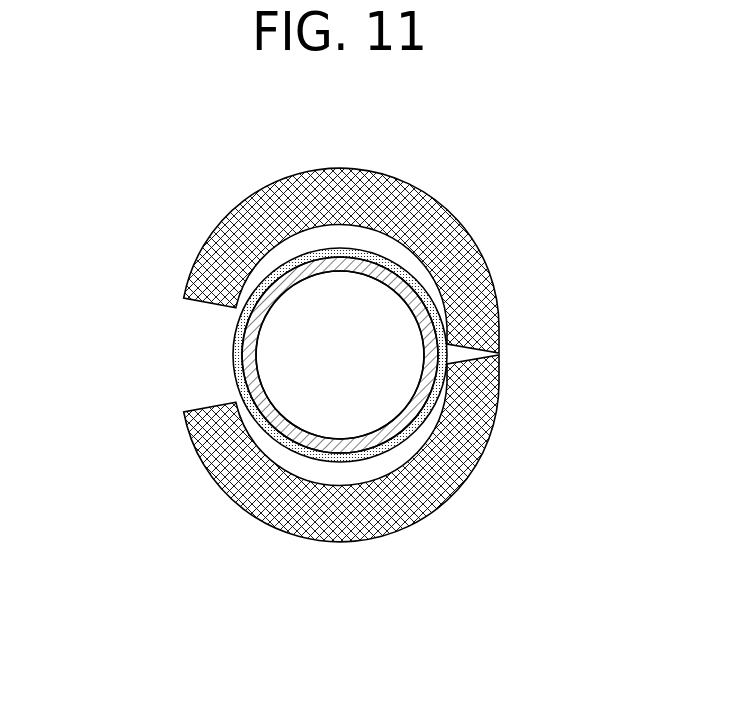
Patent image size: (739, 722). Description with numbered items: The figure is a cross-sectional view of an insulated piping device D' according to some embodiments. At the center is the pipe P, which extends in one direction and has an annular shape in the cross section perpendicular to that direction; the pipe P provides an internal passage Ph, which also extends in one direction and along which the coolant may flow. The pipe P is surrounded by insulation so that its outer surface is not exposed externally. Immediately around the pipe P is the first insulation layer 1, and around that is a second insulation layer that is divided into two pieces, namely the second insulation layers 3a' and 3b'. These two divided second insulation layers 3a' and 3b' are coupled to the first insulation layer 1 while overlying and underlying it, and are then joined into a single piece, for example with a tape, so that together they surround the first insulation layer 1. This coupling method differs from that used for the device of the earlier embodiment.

The insulated piping device D' is at (367, 336).
The second insulation layer 3a' is at (299, 260).
The second insulation layer 3b' is at (299, 448).
The first insulation layer 1 is at (351, 457).
The pipe P is at (318, 448).
The internal passage Ph is at (303, 391).